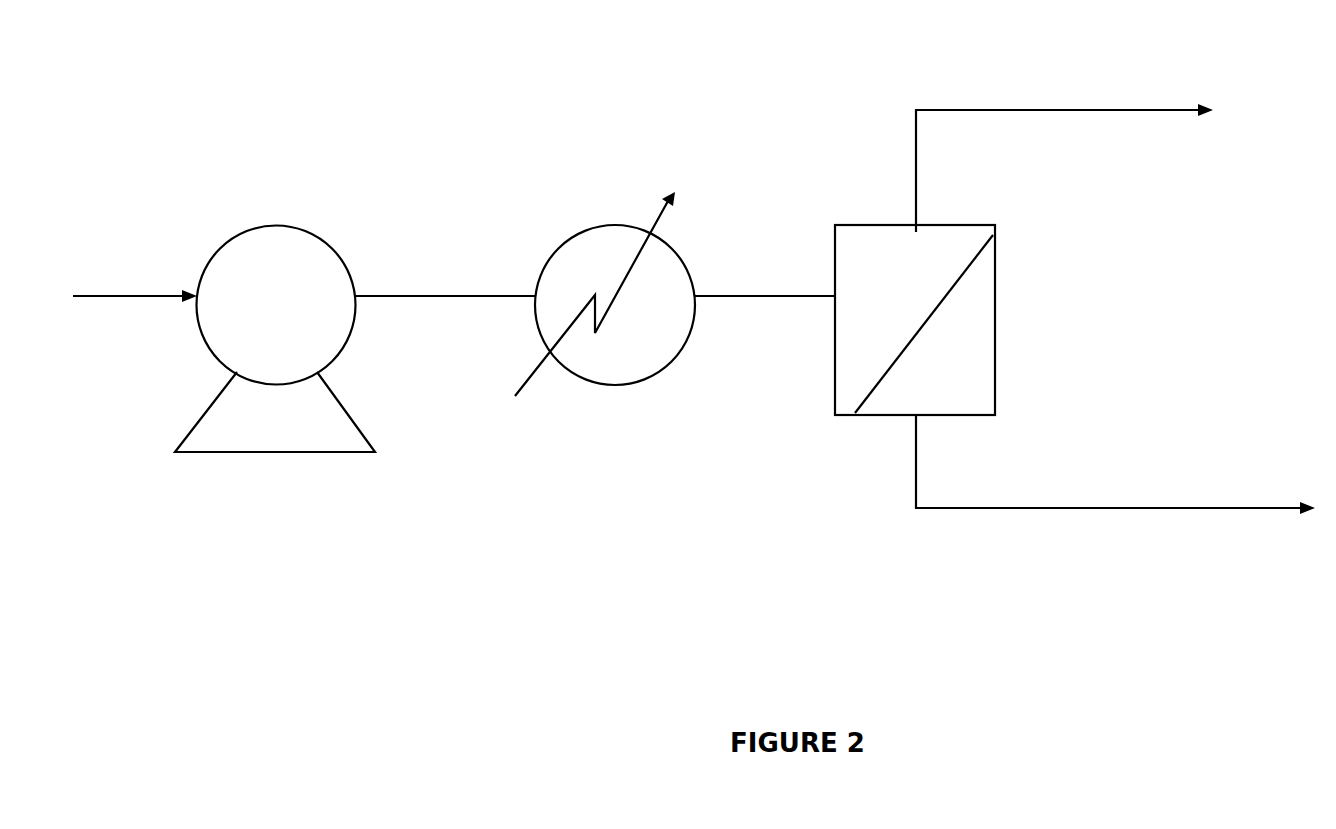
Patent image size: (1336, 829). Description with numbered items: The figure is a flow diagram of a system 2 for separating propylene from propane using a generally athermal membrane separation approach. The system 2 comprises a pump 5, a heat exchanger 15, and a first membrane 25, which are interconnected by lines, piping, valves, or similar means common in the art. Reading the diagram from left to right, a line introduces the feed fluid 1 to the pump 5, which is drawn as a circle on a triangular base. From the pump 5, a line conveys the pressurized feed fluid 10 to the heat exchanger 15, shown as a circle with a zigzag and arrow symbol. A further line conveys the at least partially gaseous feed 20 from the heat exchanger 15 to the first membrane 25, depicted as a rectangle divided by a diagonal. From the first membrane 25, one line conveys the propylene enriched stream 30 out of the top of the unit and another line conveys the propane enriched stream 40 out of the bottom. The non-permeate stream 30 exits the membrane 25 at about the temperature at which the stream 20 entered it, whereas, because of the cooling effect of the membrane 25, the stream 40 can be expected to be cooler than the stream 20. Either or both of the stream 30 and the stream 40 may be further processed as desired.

The feed fluid 1 is at (117, 292).
The system 2 is at (364, 142).
The pump 5 is at (257, 252).
The pressurized feed fluid 10 is at (455, 292).
The heat exchanger 15 is at (595, 360).
The at least partially gaseous feed 20 is at (738, 296).
The first membrane 25 is at (935, 255).
The propylene enriched stream 30 is at (1033, 110).
The propane enriched stream 40 is at (1155, 508).